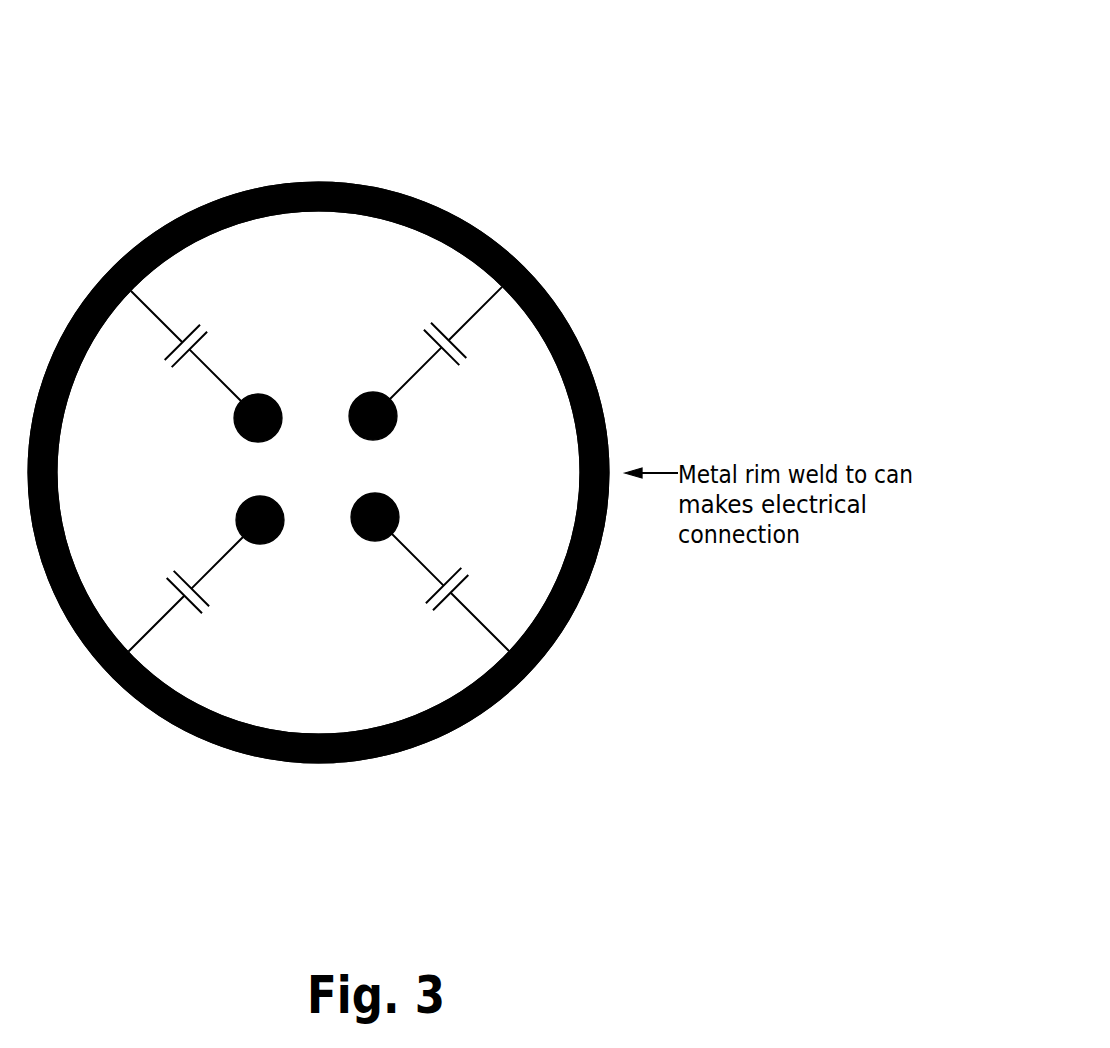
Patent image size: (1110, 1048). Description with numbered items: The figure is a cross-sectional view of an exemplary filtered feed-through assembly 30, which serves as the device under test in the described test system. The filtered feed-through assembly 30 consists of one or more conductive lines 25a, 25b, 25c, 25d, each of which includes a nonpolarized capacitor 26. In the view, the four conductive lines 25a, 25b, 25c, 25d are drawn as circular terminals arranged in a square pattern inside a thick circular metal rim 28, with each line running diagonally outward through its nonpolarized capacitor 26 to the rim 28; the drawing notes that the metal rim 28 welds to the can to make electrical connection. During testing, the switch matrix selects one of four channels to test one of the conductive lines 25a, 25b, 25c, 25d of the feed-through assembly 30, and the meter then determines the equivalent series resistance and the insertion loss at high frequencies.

The filtered feed-through assembly 30 is at (505, 98).
The metal rim 28 is at (572, 540).
The conductive line 25a is at (235, 418).
The conductive line 25b is at (250, 498).
The conductive line 25c is at (395, 405).
The conductive line 25d is at (395, 500).
The nonpolarized capacitor 26 is at (406, 327).